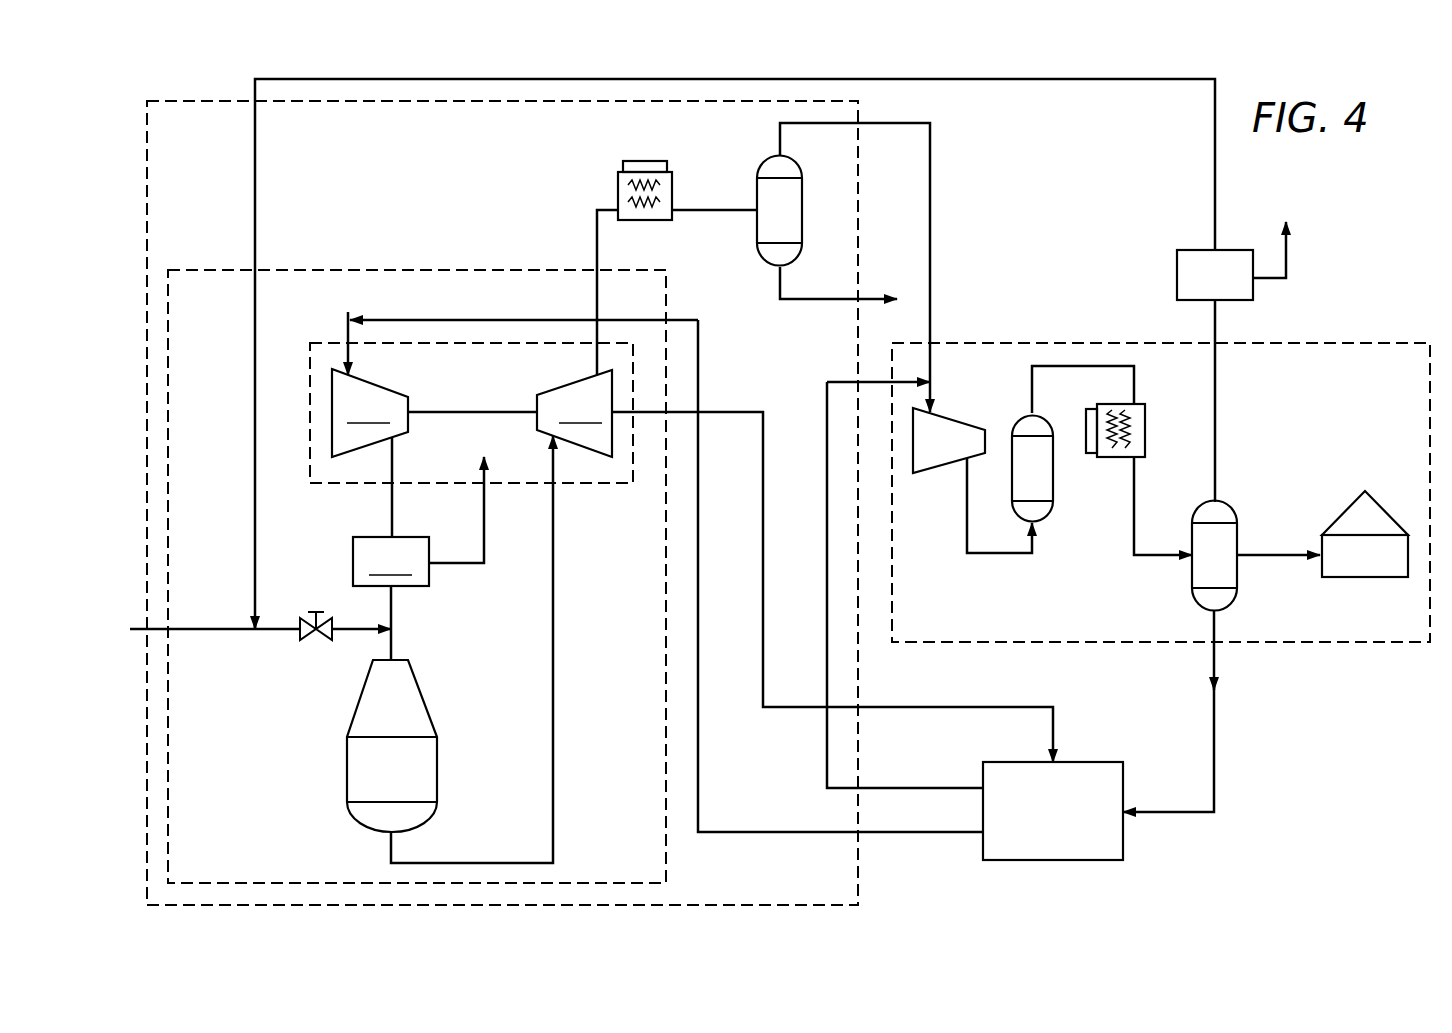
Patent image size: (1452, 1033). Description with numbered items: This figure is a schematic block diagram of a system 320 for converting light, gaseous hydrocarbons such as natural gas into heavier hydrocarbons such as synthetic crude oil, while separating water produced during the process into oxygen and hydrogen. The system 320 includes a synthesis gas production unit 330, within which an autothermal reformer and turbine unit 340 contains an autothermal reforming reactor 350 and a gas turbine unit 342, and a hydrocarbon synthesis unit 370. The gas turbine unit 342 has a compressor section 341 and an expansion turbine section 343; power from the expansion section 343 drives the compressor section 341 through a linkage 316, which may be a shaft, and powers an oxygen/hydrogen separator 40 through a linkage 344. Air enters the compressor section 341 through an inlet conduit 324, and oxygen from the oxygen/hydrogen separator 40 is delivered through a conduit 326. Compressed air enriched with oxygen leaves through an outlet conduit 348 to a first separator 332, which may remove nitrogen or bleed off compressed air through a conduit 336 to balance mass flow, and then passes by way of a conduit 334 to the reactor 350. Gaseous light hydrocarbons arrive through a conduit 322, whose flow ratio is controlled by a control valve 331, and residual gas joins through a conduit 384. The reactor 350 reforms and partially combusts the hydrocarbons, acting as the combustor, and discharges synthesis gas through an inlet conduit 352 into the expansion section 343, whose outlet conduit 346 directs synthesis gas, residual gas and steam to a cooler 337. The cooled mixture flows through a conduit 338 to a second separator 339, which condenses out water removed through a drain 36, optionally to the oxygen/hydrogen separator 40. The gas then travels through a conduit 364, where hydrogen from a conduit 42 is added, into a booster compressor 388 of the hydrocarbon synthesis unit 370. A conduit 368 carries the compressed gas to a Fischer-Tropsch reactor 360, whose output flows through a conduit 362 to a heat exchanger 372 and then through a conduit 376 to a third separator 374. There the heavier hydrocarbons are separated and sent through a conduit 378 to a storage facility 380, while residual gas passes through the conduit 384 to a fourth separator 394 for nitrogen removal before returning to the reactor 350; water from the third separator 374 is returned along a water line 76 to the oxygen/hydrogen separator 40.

The system 320 is at (1384, 294).
The synthesis gas production unit 330 is at (213, 98).
The autothermal reformer and turbine unit 340 is at (415, 269).
The gas turbine unit 342 is at (574, 488).
The hydrocarbon synthesis unit 370 is at (1320, 643).
The conduit 384 is at (1085, 79).
The fourth separator 394 is at (1177, 280).
The heat exchanger or cooler 337 is at (618, 180).
The outlet conduit 346 is at (595, 245).
The conduit 338 is at (730, 208).
The second separator 339 is at (757, 236).
The conduit 364 is at (930, 227).
The outlet conduit or drain 36 is at (813, 300).
The inlet conduit 324 is at (345, 324).
The conduit 326 is at (482, 318).
The compressor section 341 is at (370, 413).
The expansion turbine section 343 is at (574, 413).
The linkage 316 is at (446, 411).
The linkage 344 is at (730, 411).
The outlet conduit 348 is at (392, 518).
The first separator 332 is at (391, 561).
The conduit 336 is at (468, 566).
The inlet conduit 352 is at (553, 691).
The autothermal reforming reactor 350 is at (347, 770).
The conduit 334 is at (393, 651).
The conduit 322 is at (218, 626).
The control valve 331 is at (307, 614).
The booster compressor 388 is at (958, 415).
The conduit 42 is at (827, 764).
The Fischer-Tropsch reactor 360 is at (1055, 498).
The conduit 368 is at (1000, 556).
The conduit 362 is at (1134, 384).
The heat exchanger 372 is at (1118, 458).
The conduit 376 is at (1153, 553).
The third separator 374 is at (1191, 580).
The conduit 378 is at (1268, 553).
The storage facility 380 is at (1368, 577).
The water line 76 is at (1212, 669).
The oxygen/hydrogen separator 40 is at (1124, 840).